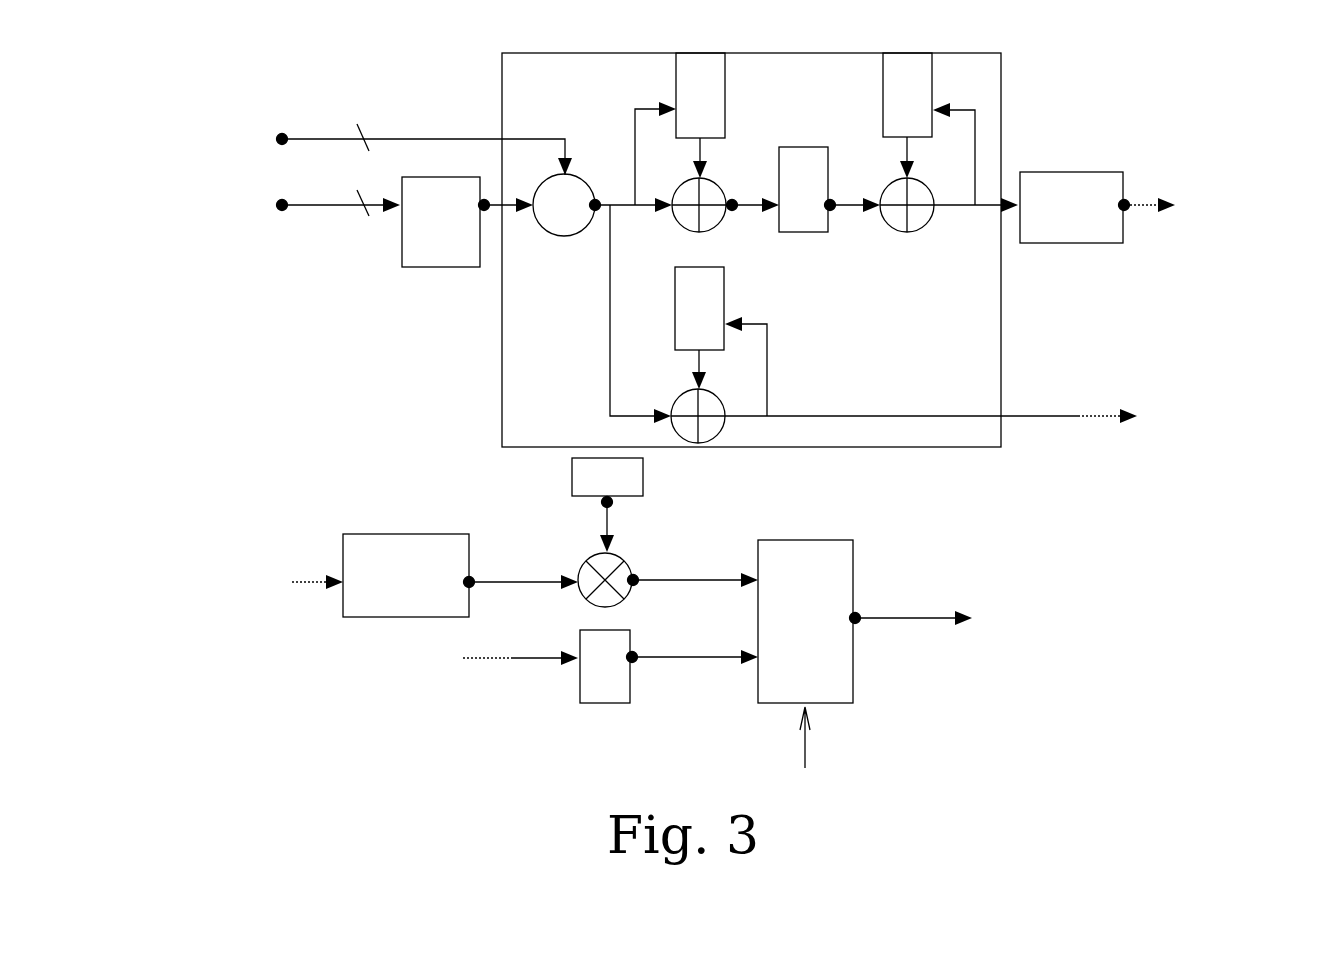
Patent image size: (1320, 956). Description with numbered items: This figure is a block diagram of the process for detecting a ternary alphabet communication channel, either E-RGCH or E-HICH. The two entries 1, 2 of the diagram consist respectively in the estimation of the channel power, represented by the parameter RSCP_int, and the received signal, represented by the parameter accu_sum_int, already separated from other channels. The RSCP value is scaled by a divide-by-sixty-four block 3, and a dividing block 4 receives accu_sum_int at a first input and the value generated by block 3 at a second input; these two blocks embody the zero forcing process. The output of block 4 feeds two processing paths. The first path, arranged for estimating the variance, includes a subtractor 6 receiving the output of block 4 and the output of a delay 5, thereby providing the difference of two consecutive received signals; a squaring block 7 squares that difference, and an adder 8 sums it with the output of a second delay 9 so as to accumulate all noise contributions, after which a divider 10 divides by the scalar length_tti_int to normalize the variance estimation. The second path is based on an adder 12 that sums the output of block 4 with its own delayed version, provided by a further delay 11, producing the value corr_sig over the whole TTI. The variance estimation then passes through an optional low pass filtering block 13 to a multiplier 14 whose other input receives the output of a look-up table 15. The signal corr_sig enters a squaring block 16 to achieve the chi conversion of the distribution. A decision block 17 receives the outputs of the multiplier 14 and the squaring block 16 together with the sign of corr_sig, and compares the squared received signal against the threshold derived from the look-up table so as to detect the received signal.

The entry 1 is at (286, 216).
The entry 2 is at (280, 132).
The divide-by-64 block 3 is at (400, 262).
The dividing block 4 is at (560, 229).
The delay 5 is at (690, 53).
The subtractor 6 is at (693, 228).
The squaring block 7 is at (793, 147).
The adder 8 is at (888, 228).
The delay 9 is at (902, 53).
The divider 10 is at (1056, 172).
The delay element z^-1 11 is at (725, 293).
The adder 12 is at (726, 428).
The filtering block 13 is at (359, 528).
The multiplier 14 is at (583, 558).
The look-up table 15 is at (643, 462).
The squaring block 16 is at (630, 695).
The decision block 17 is at (853, 698).